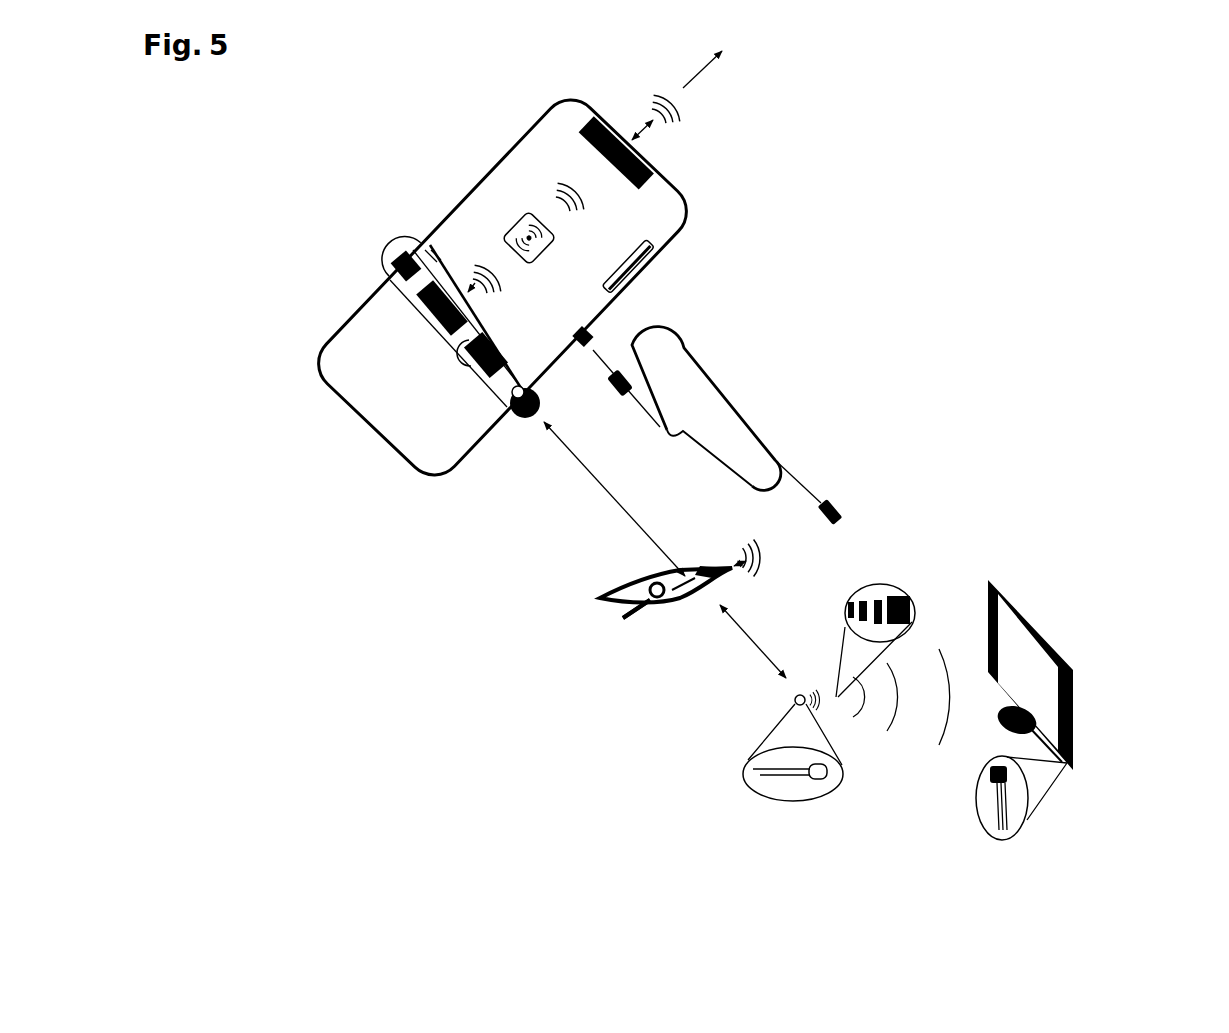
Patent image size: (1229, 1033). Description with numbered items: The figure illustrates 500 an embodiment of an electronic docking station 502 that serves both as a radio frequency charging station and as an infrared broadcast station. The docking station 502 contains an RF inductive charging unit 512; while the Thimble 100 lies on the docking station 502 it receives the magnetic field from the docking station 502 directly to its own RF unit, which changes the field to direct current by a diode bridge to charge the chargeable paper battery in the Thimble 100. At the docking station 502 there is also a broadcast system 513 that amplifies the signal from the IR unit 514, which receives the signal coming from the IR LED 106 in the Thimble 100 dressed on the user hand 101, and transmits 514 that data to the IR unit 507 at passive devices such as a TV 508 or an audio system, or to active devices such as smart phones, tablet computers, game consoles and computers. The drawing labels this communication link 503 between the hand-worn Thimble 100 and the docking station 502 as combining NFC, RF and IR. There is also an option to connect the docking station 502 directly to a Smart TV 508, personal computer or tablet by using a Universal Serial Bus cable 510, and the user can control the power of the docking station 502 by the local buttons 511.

The docking RF charging and IR broadcast station embodiment 500 is at (365, 136).
The Thimble 100 is at (386, 226).
The user hand 101 is at (642, 642).
The IR LED 106 is at (745, 804).
The electronic docking station 502 is at (353, 329).
The communication link 503 is at (561, 478).
The IR unit 507 is at (1049, 809).
The TV 508 is at (1029, 585).
The Universal Serial Bus (USB) cable 510 is at (760, 418).
The local buttons 511 is at (645, 269).
The RF inductive charging unit 512 is at (565, 231).
The broadcast system 513 is at (647, 140).
The IR unit 514 is at (985, 480).